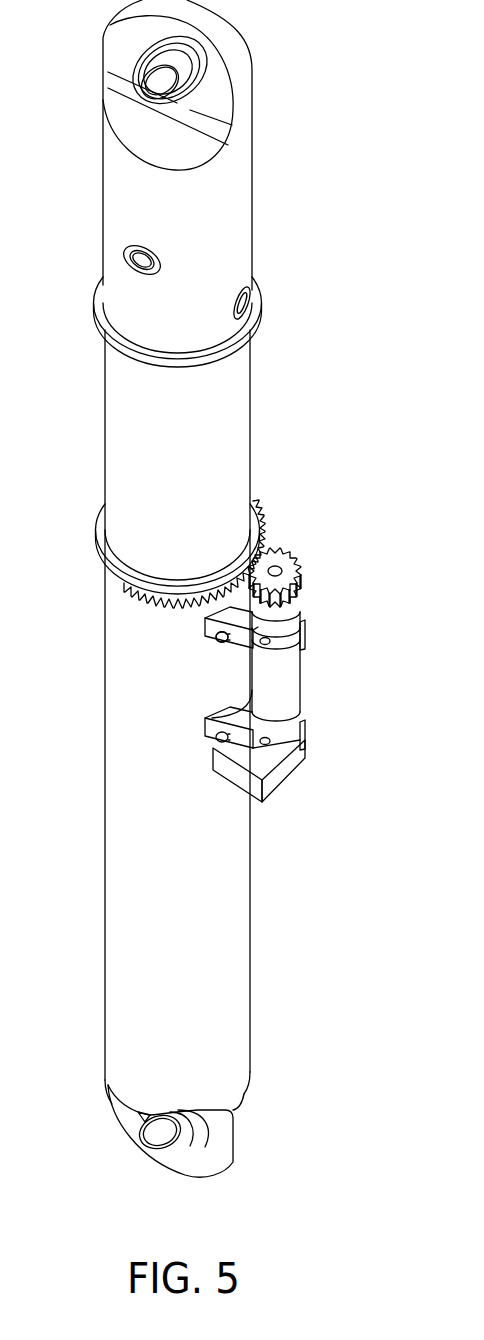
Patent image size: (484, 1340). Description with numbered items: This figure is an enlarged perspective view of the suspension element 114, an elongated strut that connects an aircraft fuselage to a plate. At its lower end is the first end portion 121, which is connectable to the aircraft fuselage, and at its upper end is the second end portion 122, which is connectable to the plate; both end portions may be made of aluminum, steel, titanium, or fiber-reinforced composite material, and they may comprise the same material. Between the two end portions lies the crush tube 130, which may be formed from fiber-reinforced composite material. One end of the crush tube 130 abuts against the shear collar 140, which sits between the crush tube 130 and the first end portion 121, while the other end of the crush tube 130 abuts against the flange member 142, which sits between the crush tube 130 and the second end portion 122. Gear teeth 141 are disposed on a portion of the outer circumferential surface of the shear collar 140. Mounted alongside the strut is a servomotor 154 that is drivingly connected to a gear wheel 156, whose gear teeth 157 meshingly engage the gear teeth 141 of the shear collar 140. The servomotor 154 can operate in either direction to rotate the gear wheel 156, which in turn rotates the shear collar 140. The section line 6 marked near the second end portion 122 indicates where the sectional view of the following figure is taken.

The suspension element 114 is at (224, 588).
The section line 6- 6 is at (243, 43).
The second end portion 122 is at (113, 108).
The flange member 142 is at (97, 304).
The crush tube 130 is at (117, 456).
The shear collar 140 is at (100, 540).
The gear teeth 141 is at (165, 611).
The gear wheel 156 is at (287, 560).
The gear teeth 157 is at (300, 590).
The servomotor 154 is at (300, 682).
The first end portion 121 is at (223, 1142).